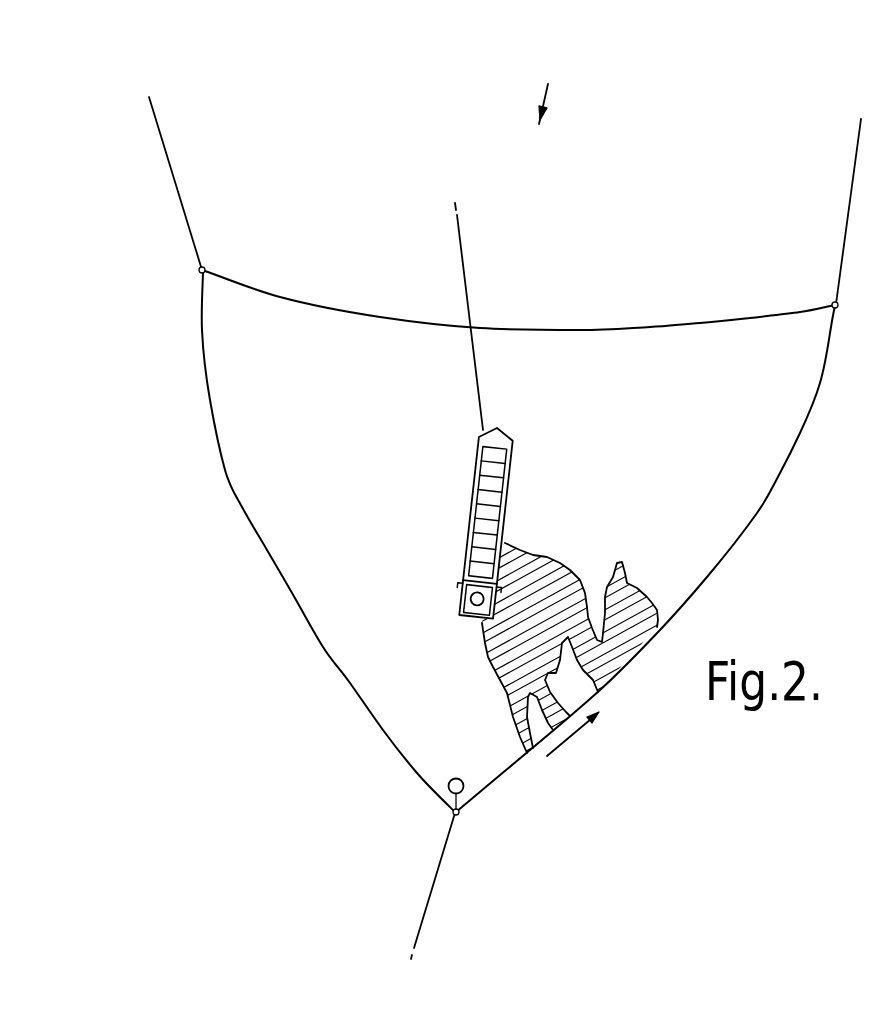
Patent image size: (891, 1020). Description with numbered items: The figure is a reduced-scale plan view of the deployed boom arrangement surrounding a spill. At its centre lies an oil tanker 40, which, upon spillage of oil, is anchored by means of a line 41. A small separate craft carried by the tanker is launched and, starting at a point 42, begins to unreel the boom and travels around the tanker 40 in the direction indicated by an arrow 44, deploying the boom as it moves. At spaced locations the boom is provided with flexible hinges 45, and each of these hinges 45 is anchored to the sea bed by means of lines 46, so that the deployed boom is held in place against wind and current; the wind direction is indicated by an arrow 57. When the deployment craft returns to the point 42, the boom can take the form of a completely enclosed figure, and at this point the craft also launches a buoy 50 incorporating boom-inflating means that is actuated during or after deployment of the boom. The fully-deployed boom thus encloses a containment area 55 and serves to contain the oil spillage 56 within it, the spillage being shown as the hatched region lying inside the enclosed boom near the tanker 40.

The oil tanker 40 is at (498, 442).
The line 41 is at (467, 288).
The point 42 is at (454, 814).
The arrow 44 is at (575, 737).
The flexible hinges 45 is at (204, 276).
The lines 46 is at (190, 224).
The buoy 50 is at (456, 778).
The containment area 55 is at (272, 472).
The oil spillage 56 is at (570, 571).
The arrow 57 is at (549, 89).